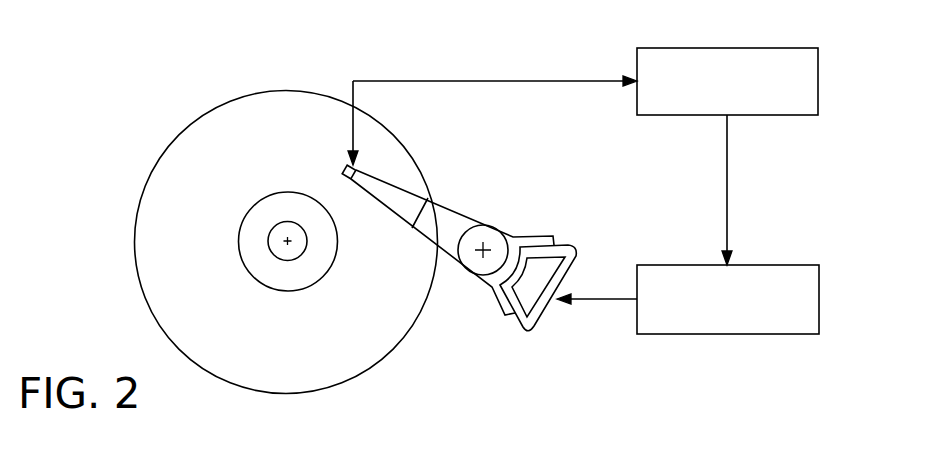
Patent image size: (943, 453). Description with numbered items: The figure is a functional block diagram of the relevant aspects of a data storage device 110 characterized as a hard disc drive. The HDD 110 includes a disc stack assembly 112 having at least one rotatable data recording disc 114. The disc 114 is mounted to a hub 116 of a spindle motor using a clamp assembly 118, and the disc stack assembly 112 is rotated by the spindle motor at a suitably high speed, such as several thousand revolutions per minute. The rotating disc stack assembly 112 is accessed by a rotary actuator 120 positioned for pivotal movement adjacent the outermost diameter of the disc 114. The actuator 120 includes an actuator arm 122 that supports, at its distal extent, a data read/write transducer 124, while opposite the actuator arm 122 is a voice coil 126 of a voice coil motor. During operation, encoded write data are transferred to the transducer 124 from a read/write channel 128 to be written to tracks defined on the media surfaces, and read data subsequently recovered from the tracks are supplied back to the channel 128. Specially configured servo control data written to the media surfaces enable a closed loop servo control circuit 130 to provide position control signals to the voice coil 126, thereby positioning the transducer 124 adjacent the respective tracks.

The data storage device 110 is at (143, 52).
The disc stack assembly 112 is at (165, 285).
The disc 114 is at (366, 358).
The hub 116 is at (287, 222).
The clamp assembly 118 is at (259, 262).
The rotary actuator 120 is at (514, 215).
The actuator arm 122 is at (435, 208).
The data read/write transducer 124 is at (343, 168).
The voice coil 126 is at (567, 240).
The read/write channel 128 is at (728, 48).
The closed loop servo control circuit 130 is at (763, 265).